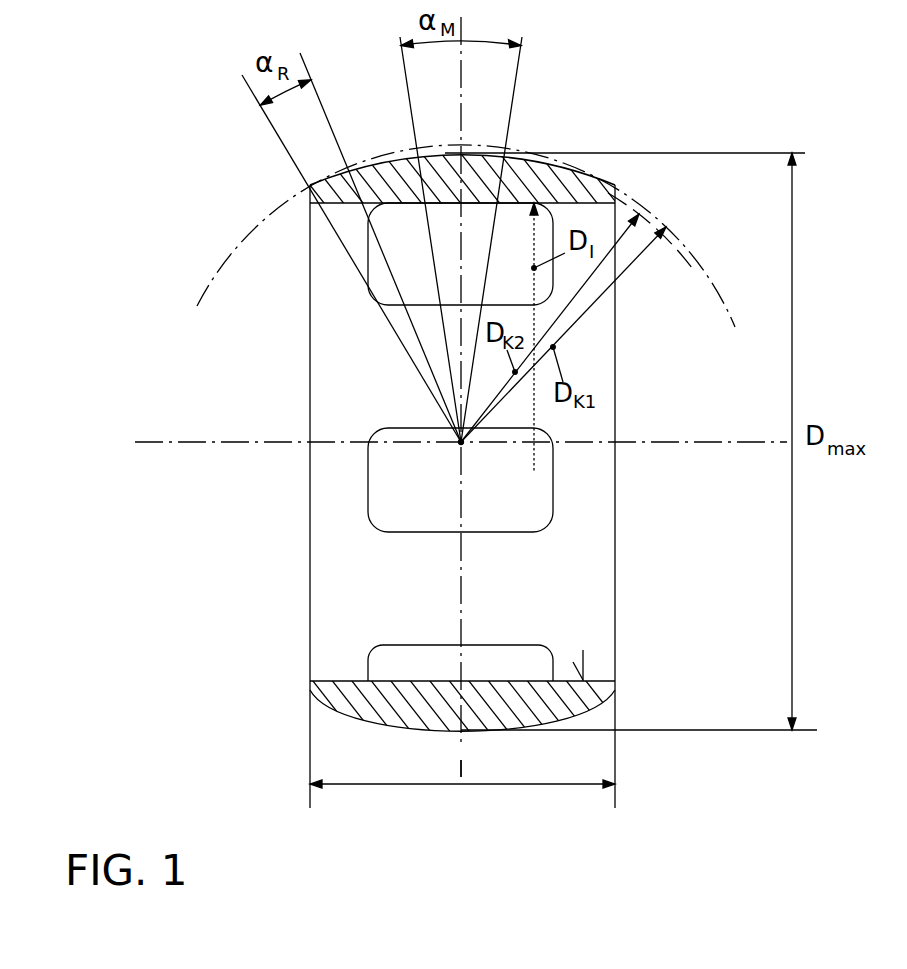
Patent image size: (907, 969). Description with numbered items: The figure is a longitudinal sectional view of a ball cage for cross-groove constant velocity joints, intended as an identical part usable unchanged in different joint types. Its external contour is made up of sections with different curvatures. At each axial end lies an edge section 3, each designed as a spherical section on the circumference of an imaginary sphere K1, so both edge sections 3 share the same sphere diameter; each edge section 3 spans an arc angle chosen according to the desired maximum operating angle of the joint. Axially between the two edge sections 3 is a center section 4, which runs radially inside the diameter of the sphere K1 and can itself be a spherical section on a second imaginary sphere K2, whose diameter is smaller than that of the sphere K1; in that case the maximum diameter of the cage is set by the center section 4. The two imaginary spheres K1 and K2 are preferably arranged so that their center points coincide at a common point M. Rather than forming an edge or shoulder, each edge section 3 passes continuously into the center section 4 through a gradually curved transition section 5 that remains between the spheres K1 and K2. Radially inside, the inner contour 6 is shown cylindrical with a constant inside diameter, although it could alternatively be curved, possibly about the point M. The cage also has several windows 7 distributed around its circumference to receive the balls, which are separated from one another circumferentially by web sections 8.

The axial edge section 3 is at (328, 174).
The center section 4 is at (443, 152).
The transition section 5 is at (372, 161).
The inner contour 6 is at (368, 483).
The window 7 is at (370, 662).
The web section 8 is at (415, 562).
The imaginary sphere K1 is at (710, 278).
The second imaginary sphere K2 is at (683, 257).
The common center point M is at (463, 443).